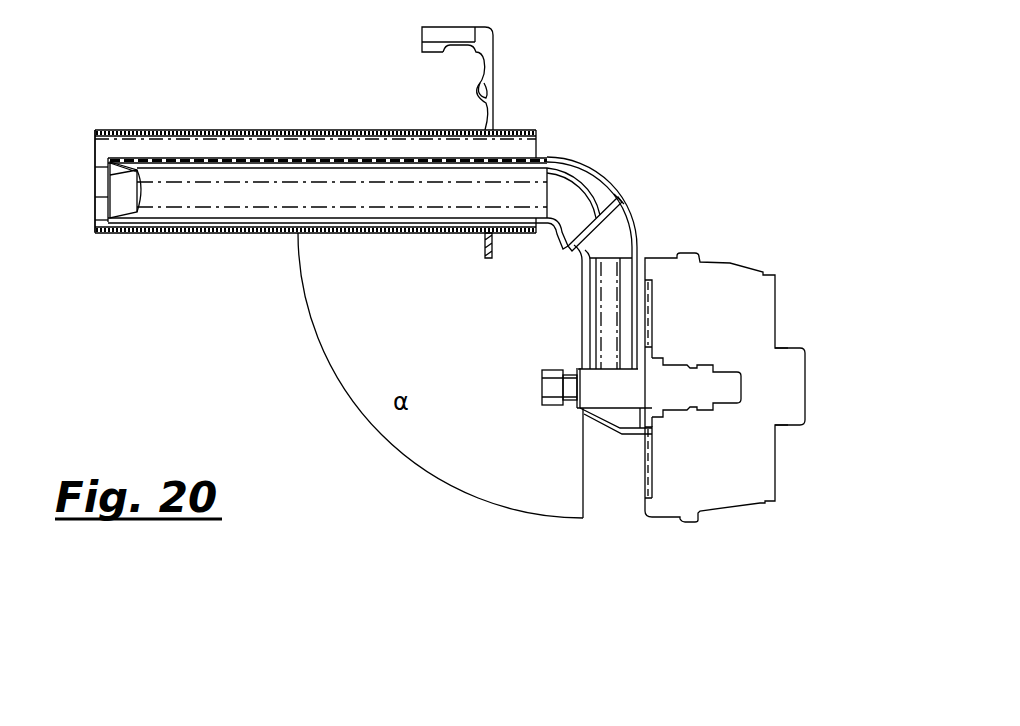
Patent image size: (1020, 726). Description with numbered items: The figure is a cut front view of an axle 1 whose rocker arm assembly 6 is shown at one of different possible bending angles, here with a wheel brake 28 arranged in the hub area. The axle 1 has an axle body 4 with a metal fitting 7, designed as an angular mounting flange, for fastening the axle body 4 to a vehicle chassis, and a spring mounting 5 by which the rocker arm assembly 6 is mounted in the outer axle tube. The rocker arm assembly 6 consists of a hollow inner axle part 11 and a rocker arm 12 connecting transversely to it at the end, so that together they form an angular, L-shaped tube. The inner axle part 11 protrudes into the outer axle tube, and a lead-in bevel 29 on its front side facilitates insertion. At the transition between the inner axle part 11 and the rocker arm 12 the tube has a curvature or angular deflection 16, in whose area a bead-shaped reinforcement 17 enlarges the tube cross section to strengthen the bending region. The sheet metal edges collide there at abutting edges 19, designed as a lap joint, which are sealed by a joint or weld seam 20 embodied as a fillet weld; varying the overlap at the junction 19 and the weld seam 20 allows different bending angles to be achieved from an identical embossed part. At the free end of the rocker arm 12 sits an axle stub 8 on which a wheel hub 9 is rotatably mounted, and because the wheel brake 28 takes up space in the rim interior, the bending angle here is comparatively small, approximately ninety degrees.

The axle 1 is at (168, 103).
The axle body 4 is at (315, 146).
The spring mounting 5 is at (351, 133).
The rocker arm assembly 6 is at (440, 375).
The metal fitting 7 is at (488, 43).
The axle stub 8 is at (632, 383).
The wheel hub 9 is at (707, 17).
The inner axle part 11 is at (410, 190).
The rocker arm 12 is at (602, 300).
The curvature or angular deflection 16 is at (548, 248).
The reinforcement bead 17 is at (676, 200).
The abutting edges 19 is at (676, 200).
The joint or weld seam 20 is at (618, 197).
The wheel brake 28 is at (722, 463).
The lead-in bevel 29 is at (118, 190).